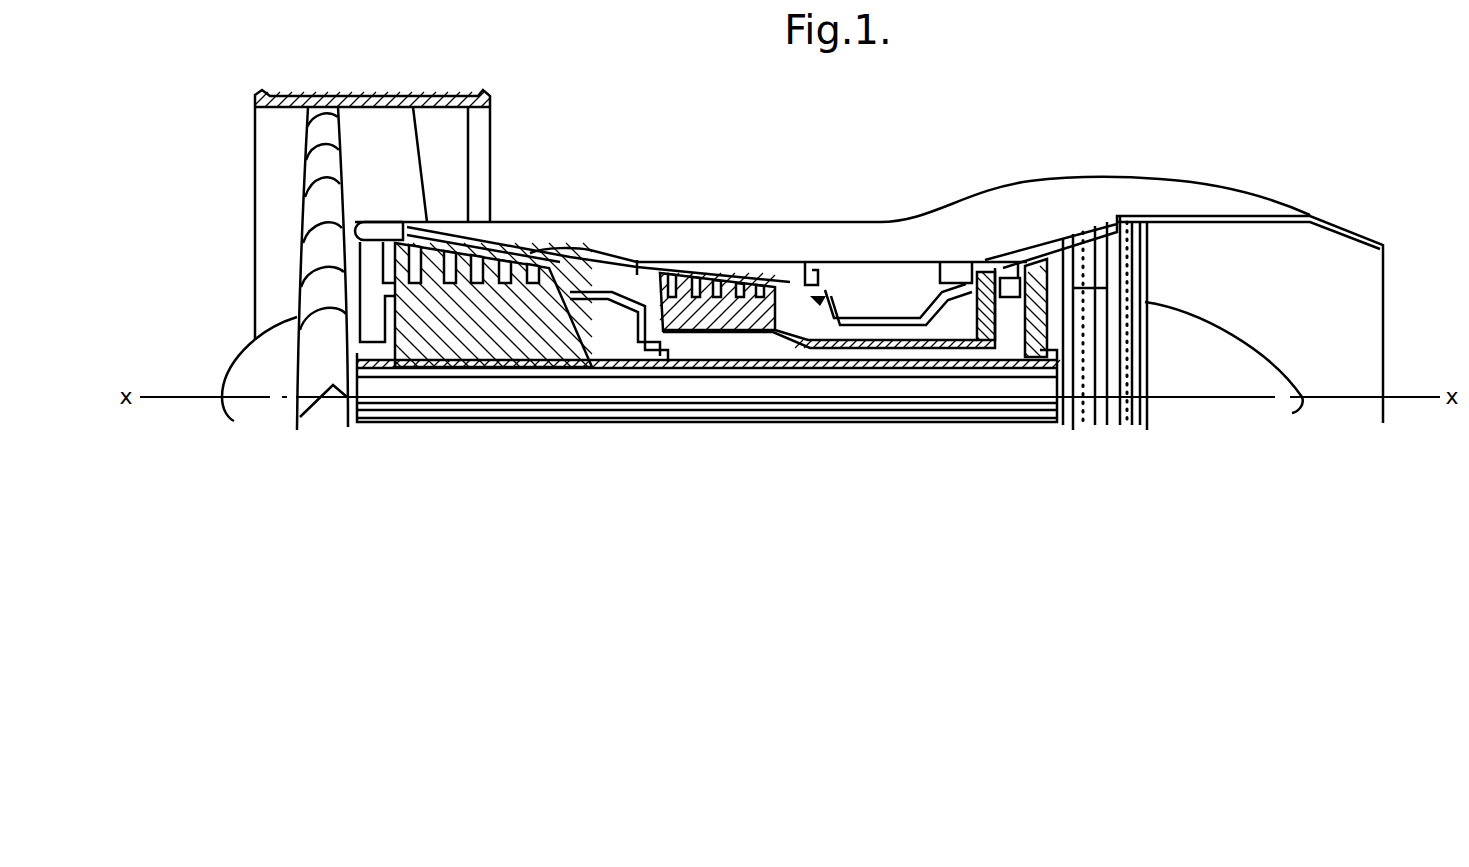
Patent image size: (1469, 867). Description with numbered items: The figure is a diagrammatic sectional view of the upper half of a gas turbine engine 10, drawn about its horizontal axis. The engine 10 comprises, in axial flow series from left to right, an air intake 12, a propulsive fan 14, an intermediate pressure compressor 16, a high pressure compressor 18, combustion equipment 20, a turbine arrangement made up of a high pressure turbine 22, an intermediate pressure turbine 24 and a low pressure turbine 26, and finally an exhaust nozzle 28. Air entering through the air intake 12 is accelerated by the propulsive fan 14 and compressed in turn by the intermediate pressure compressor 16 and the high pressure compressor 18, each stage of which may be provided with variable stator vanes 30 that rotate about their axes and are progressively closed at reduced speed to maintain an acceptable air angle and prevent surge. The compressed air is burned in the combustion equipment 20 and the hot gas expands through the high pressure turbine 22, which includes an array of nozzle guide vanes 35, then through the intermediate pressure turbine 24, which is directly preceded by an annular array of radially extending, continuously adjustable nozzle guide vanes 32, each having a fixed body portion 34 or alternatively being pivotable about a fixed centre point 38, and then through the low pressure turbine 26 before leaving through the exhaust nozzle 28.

The gas turbine engine 10 is at (656, 176).
The air intake 12 is at (239, 231).
The propulsive fan 14 is at (328, 138).
The intermediate pressure compressor 16 is at (483, 303).
The high pressure compressor 18 is at (718, 272).
The combustion equipment 20 is at (898, 256).
The high pressure turbine 22 is at (985, 258).
The intermediate pressure turbine 24 is at (1065, 260).
The low pressure turbine 26 is at (1113, 273).
The exhaust nozzle 28 is at (1343, 342).
The variable stator vanes 30 is at (840, 292).
The nozzle guide vanes 32 is at (900, 320).
The fixed body portion 34 is at (868, 268).
The nozzle guide vanes 35 is at (953, 267).
The fixed centre point 38 is at (840, 263).